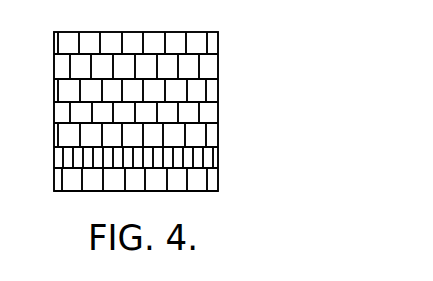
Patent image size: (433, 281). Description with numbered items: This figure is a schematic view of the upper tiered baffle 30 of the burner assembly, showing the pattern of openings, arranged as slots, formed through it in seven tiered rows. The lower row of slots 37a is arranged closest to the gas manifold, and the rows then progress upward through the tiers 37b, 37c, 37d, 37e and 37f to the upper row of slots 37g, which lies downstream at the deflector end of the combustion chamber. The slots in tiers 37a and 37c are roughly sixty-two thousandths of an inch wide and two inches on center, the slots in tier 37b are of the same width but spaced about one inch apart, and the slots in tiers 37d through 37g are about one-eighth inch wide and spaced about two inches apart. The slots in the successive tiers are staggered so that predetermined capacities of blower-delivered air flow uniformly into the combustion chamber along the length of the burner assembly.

The upper tiered baffle 30 is at (235, 112).
The lower row of slots 37a is at (219, 180).
The second tier of slots 37b is at (219, 157).
The third tier of slots 37c is at (219, 133).
The fourth tier of slots 37d is at (219, 102).
The fifth tier of slots 37e is at (219, 79).
The sixth tier of slots 37f is at (219, 54).
The upper row of slots 37g is at (218, 33).